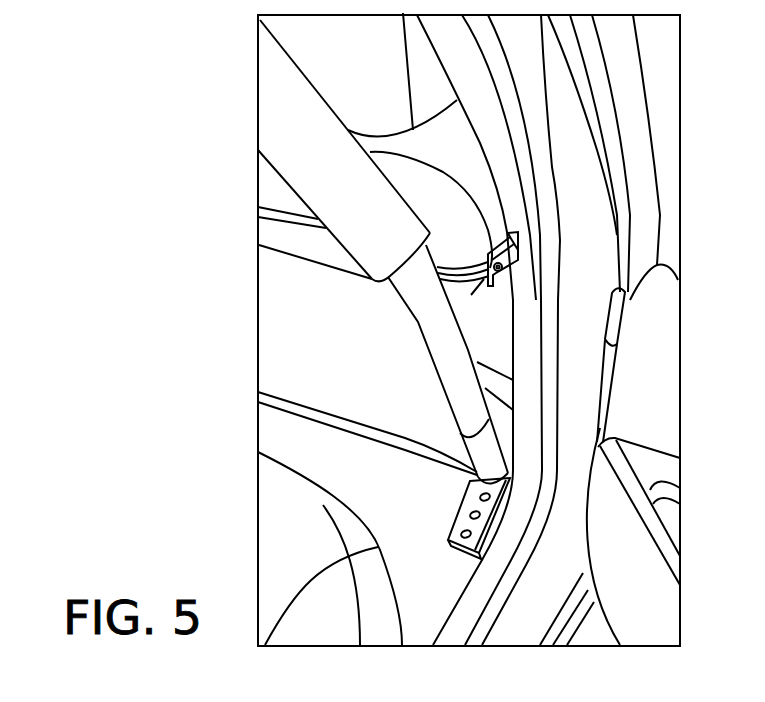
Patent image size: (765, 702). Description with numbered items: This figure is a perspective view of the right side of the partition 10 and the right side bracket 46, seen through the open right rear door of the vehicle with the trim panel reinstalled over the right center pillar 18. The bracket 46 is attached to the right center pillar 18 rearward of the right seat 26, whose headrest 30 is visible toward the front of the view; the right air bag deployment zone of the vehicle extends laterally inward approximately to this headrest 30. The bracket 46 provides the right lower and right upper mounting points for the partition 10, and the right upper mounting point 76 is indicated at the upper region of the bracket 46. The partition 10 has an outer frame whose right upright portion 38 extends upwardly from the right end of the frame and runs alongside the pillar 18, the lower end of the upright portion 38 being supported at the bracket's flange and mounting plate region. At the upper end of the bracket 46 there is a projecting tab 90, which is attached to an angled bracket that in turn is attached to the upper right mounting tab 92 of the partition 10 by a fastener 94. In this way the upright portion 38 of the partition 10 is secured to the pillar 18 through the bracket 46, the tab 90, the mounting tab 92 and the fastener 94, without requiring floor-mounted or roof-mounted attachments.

The partition 10 is at (285, 106).
The headrest 30 is at (371, 68).
The right seat 26 is at (424, 181).
The right center pillar 18 is at (590, 151).
The right upper mounting point 76 is at (512, 208).
The right side bracket 46 is at (510, 232).
The projecting tab 90 is at (518, 262).
The fastener 94 is at (503, 269).
The upper right mounting tab 92 is at (449, 297).
The right upright portion 38 is at (468, 355).